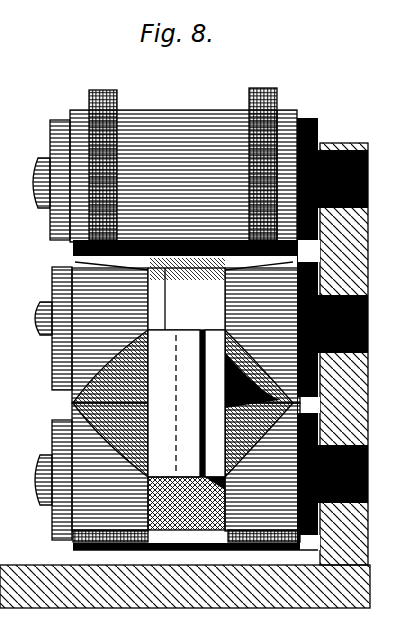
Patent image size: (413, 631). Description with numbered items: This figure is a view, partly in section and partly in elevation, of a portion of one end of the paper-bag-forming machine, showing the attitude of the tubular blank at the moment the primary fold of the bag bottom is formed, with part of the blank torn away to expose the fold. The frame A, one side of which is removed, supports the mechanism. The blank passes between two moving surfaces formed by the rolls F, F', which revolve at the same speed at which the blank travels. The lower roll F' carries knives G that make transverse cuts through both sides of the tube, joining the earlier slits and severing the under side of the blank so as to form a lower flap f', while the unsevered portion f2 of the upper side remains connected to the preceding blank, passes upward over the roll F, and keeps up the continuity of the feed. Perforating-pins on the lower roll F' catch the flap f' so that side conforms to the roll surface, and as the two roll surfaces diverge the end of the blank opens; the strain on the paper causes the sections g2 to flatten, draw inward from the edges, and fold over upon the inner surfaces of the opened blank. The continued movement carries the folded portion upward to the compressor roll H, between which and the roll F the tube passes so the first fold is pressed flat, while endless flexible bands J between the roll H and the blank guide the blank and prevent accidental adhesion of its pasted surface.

The frame A is at (194, 387).
The roll H is at (55, 140).
The bands J is at (183, 151).
The roll F is at (154, 369).
The roll F' is at (155, 471).
The unsevered portion f2 is at (186, 294).
The sections g2 is at (186, 403).
The flap f' is at (186, 503).
The knives G is at (75, 540).